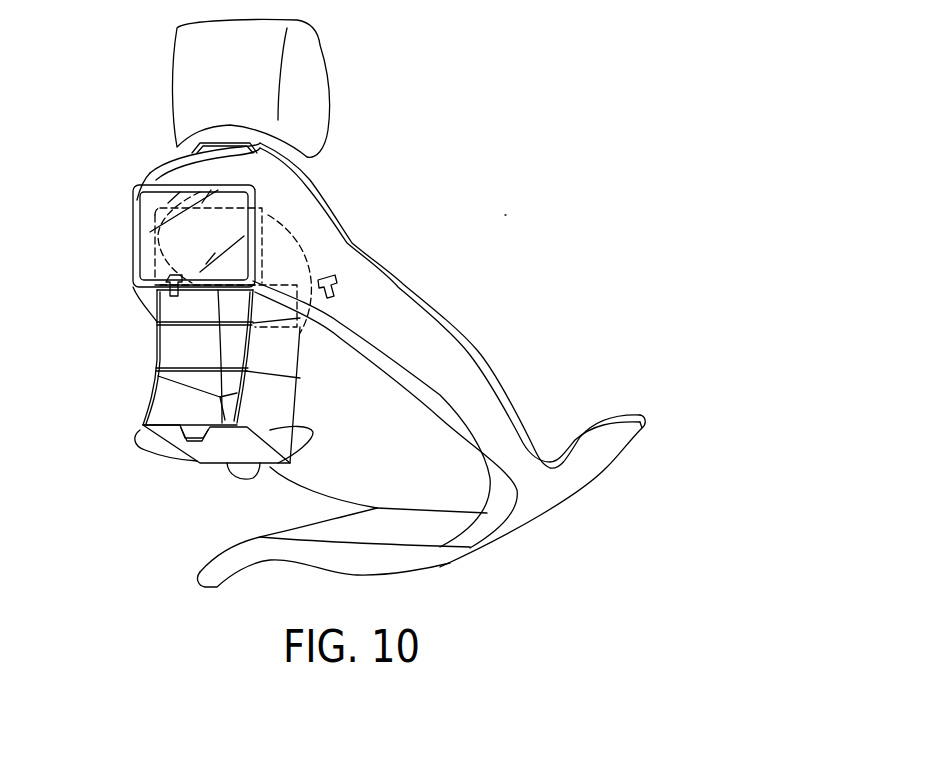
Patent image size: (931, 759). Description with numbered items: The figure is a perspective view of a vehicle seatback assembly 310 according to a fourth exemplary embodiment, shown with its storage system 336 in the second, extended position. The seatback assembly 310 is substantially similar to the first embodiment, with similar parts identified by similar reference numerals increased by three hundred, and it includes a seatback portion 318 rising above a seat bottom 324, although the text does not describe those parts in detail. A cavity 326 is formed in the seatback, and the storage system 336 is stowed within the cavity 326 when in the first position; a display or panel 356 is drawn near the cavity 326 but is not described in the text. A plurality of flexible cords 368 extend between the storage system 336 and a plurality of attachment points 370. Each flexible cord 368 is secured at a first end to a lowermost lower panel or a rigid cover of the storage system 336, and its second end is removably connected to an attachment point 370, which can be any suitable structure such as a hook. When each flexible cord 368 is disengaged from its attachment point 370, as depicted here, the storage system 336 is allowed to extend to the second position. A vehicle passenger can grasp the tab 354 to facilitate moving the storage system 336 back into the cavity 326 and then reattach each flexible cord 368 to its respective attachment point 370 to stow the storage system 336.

The vehicle seatback assembly 310 is at (505, 215).
The seat back frame 318 is at (493, 365).
The seat bottom 324 is at (343, 473).
The cavity 326 is at (338, 211).
The storage system 336 is at (152, 387).
The tab 354 is at (140, 428).
The display screen 356 is at (137, 210).
The flexible cord 368 is at (233, 475).
The attachment point 370 is at (137, 237).